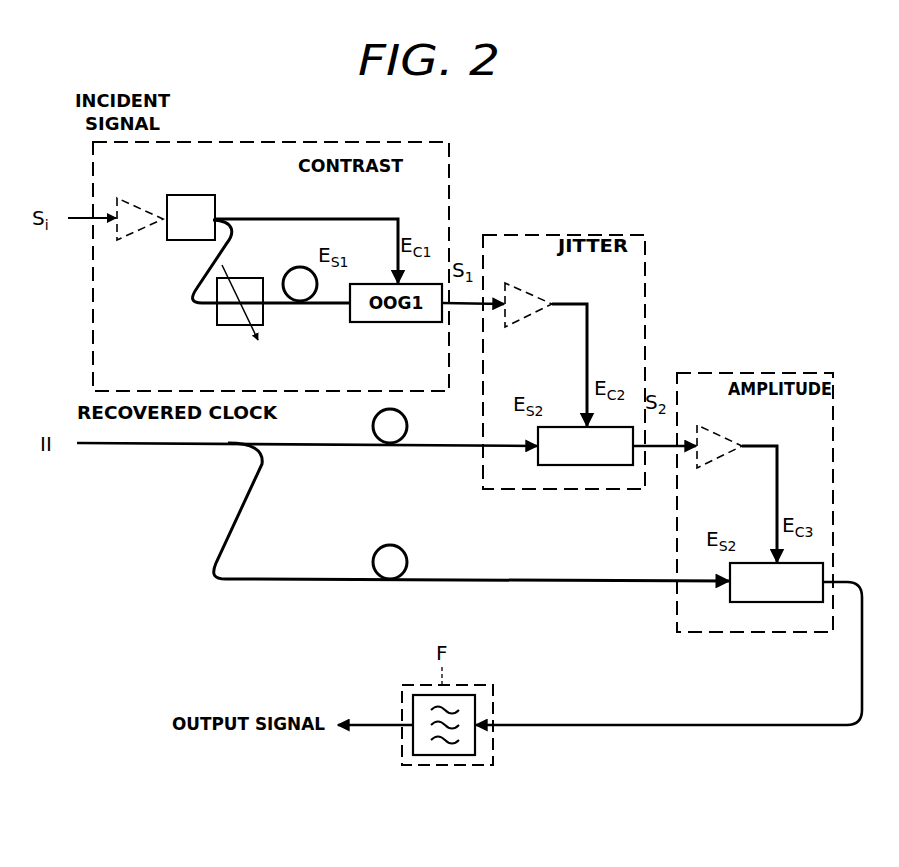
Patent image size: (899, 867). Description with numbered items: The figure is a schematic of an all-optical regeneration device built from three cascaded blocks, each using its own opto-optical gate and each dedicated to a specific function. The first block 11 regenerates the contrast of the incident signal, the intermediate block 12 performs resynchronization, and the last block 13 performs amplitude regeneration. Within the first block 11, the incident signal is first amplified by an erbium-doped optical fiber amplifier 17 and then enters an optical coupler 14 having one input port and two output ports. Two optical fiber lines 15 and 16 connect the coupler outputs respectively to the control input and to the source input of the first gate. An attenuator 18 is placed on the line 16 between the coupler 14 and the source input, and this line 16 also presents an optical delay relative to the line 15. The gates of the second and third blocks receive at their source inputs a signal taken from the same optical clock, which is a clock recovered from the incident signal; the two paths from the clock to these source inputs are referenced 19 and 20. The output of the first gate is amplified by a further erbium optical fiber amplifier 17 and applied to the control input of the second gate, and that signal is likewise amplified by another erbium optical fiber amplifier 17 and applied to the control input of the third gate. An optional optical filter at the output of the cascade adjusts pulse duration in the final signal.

The first block 11 is at (278, 141).
The intermediate block 12 is at (572, 235).
The last block 13 is at (760, 373).
The optical coupler 14 is at (187, 200).
The optical fiber line 15 is at (300, 219).
The optical fiber line 16 is at (202, 272).
The erbium-doped optical fiber amplifier 17 is at (120, 197).
The attenuator 18 is at (237, 322).
The path 19 is at (300, 447).
The path 20 is at (300, 585).